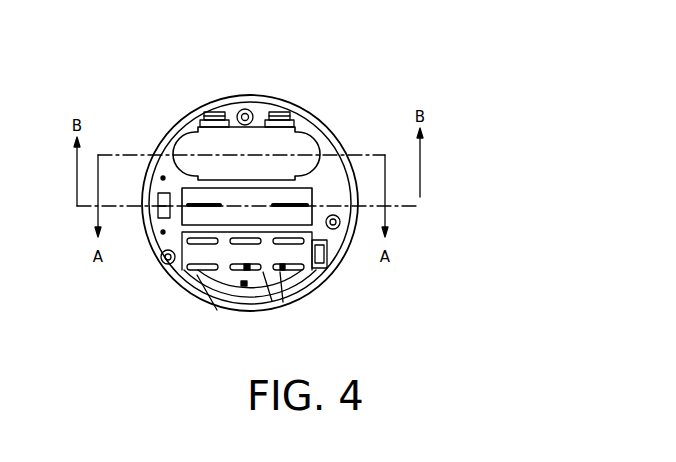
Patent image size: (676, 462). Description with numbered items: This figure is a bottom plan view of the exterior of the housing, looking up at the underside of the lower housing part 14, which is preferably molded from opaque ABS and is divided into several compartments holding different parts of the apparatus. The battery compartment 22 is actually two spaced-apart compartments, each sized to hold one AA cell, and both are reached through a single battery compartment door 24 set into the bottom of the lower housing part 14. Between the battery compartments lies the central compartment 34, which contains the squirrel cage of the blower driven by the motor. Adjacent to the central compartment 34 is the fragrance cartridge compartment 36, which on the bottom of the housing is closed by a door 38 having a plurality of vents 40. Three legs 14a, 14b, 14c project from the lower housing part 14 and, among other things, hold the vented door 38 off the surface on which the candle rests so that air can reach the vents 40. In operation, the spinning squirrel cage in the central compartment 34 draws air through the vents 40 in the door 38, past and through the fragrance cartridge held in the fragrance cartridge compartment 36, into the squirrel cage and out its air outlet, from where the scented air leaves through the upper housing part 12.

The upper housing part 12 is at (327, 130).
The lower housing part 14 is at (328, 187).
The leg 14a is at (161, 263).
The leg 14b is at (246, 109).
The leg 14c is at (335, 229).
The battery compartment 22 is at (300, 137).
The battery compartment door 24 is at (242, 142).
The central compartment 34 is at (313, 200).
The fragrance cartridge compartment 36 is at (322, 270).
The door 38 is at (200, 272).
The vents 40 is at (283, 242).